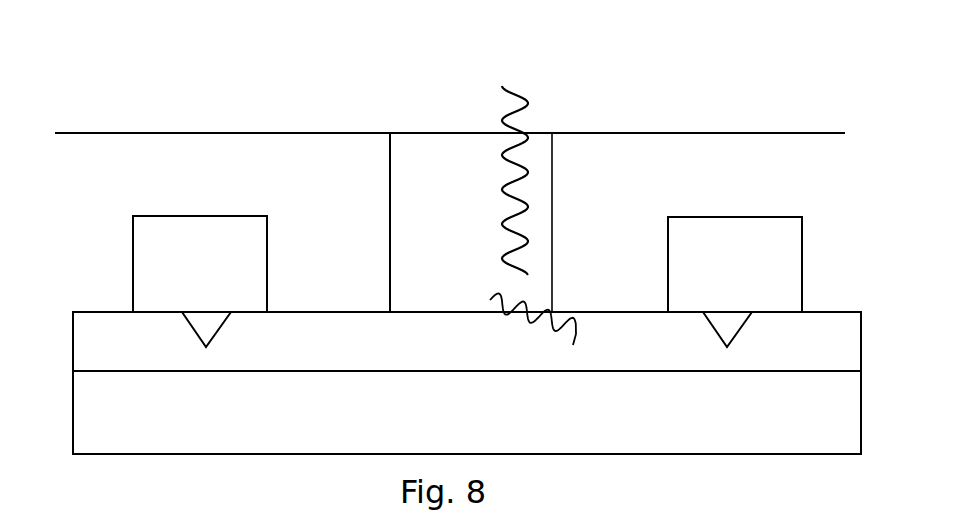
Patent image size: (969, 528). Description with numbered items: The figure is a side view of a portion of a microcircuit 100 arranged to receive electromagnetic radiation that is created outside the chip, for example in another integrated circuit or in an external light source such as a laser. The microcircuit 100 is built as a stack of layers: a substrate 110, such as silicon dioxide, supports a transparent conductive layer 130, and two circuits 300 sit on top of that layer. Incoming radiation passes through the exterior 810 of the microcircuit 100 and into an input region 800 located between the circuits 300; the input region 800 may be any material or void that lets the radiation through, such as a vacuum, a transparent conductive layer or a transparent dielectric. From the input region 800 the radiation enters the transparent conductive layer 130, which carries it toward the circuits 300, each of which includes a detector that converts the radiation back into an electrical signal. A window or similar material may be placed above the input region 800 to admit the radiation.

The microcircuit 100 is at (141, 96).
The substrate 110 is at (467, 412).
The transparent conductive layer 130 is at (467, 341).
The circuit 300 is at (467, 281).
The input region 800 is at (509, 215).
The exterior 810 is at (582, 133).